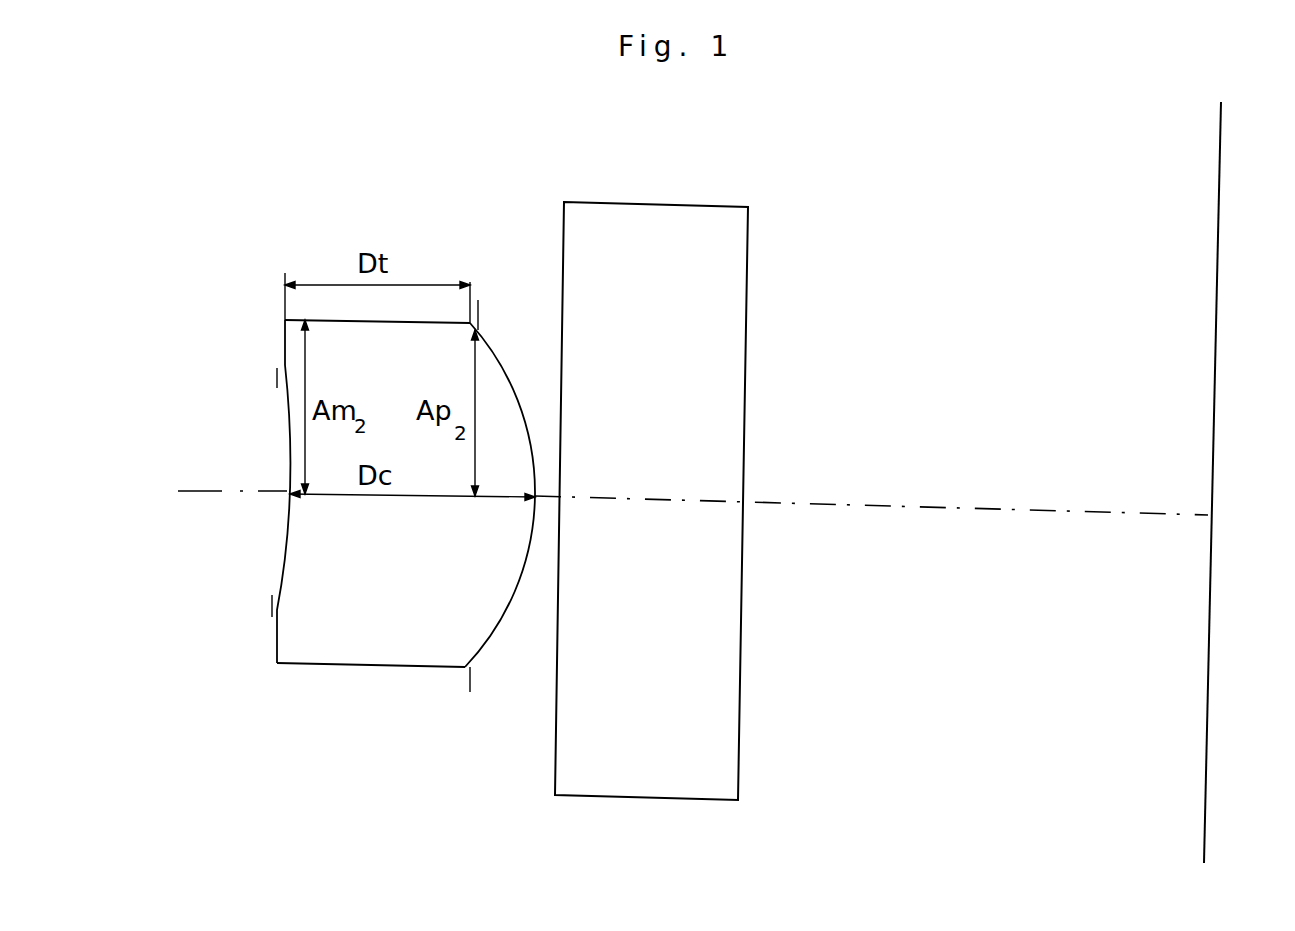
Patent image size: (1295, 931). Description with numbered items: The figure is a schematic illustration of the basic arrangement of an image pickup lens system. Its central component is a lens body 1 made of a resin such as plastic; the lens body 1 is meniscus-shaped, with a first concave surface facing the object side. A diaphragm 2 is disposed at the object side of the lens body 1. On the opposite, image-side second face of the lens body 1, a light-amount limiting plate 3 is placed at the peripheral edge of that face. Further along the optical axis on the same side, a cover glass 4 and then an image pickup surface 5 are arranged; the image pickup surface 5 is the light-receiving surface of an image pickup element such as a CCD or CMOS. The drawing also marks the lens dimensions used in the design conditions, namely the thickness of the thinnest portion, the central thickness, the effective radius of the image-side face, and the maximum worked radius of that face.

The lens body 1 is at (347, 663).
The diaphragm 2 is at (270, 603).
The light-amount limiting plate 3 is at (472, 685).
The cover glass 4 is at (735, 727).
The image pickup surface 5 is at (1205, 749).